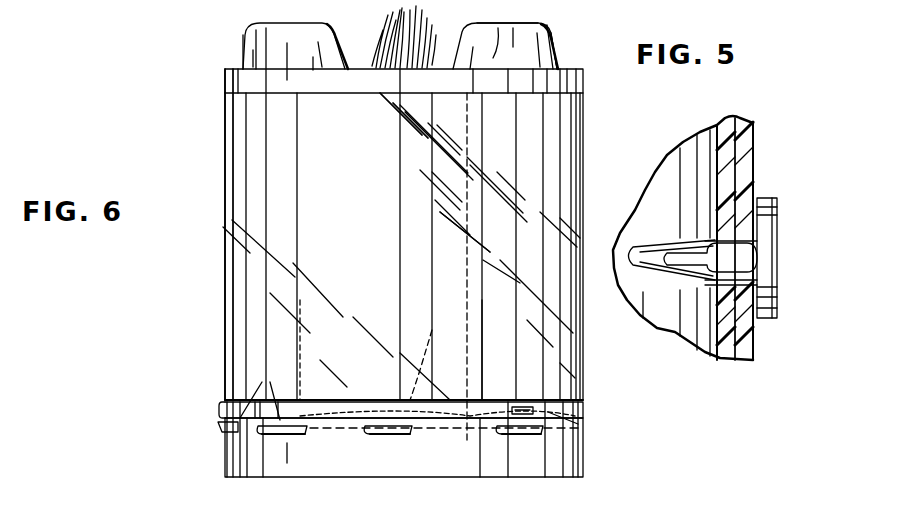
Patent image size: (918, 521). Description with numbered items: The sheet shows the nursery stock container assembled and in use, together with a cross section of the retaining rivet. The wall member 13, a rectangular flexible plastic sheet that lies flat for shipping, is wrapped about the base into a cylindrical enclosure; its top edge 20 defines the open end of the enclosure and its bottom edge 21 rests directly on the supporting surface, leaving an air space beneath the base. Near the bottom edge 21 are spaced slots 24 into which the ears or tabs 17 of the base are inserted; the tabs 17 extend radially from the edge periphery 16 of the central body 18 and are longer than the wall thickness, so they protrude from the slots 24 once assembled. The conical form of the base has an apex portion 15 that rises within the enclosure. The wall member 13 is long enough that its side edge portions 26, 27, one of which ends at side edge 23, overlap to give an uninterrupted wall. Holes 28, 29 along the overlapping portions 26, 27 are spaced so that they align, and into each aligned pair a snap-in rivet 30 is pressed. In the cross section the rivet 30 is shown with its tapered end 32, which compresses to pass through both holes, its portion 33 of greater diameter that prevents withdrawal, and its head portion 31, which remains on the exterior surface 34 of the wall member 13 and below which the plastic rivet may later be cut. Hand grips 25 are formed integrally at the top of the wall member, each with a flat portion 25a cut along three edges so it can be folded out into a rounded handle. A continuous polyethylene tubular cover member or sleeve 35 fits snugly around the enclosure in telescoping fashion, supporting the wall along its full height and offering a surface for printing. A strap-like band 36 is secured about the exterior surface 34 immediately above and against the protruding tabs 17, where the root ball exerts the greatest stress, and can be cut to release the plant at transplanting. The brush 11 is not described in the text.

In FIG. 6, the brush 11 is at (377, 32).
In FIG. 6, the wall member 13 is at (220, 86).
In FIG. 5, the wall member 13 is at (750, 115).
In FIG. 6, the apex portion 15 is at (427, 362).
In FIG. 6, the edge periphery 16 is at (453, 428).
In FIG. 6, the ears or tabs 17 is at (222, 432).
In FIG. 6, the central body 18 is at (494, 350).
In FIG. 6, the top edge 20 is at (577, 63).
In FIG. 6, the bottom edge 21 is at (205, 5).
In FIG. 6, the side edge 23 is at (380, 93).
In FIG. 6, the slots or openings 24 is at (150, 12).
In FIG. 6, the hand grips 25 is at (298, 23).
In FIG. 6, the flat portion 25a is at (258, 57).
In FIG. 6, the side edge portion 26 is at (430, 237).
In FIG. 5, the side edge portion 26 is at (725, 350).
In FIG. 6, the side edge portion 27 is at (400, 190).
In FIG. 5, the side edge portion 27 is at (745, 362).
In FIG. 6, the holes 28 is at (508, 11).
In FIG. 6, the holes 29 is at (603, 34).
In FIG. 5, the snap-in rivet 30 is at (645, 280).
In FIG. 5, the head portion 31 is at (768, 320).
In FIG. 5, the tapered end 32 is at (640, 260).
In FIG. 5, the portion of greater diameter 33 is at (715, 228).
In FIG. 6, the exterior surface 34 is at (238, 103).
In FIG. 5, the exterior surface 34 is at (757, 128).
In FIG. 6, the tubular cover member or outer sleeve 35 is at (225, 305).
In FIG. 6, the strap-like member or band 36 is at (222, 408).